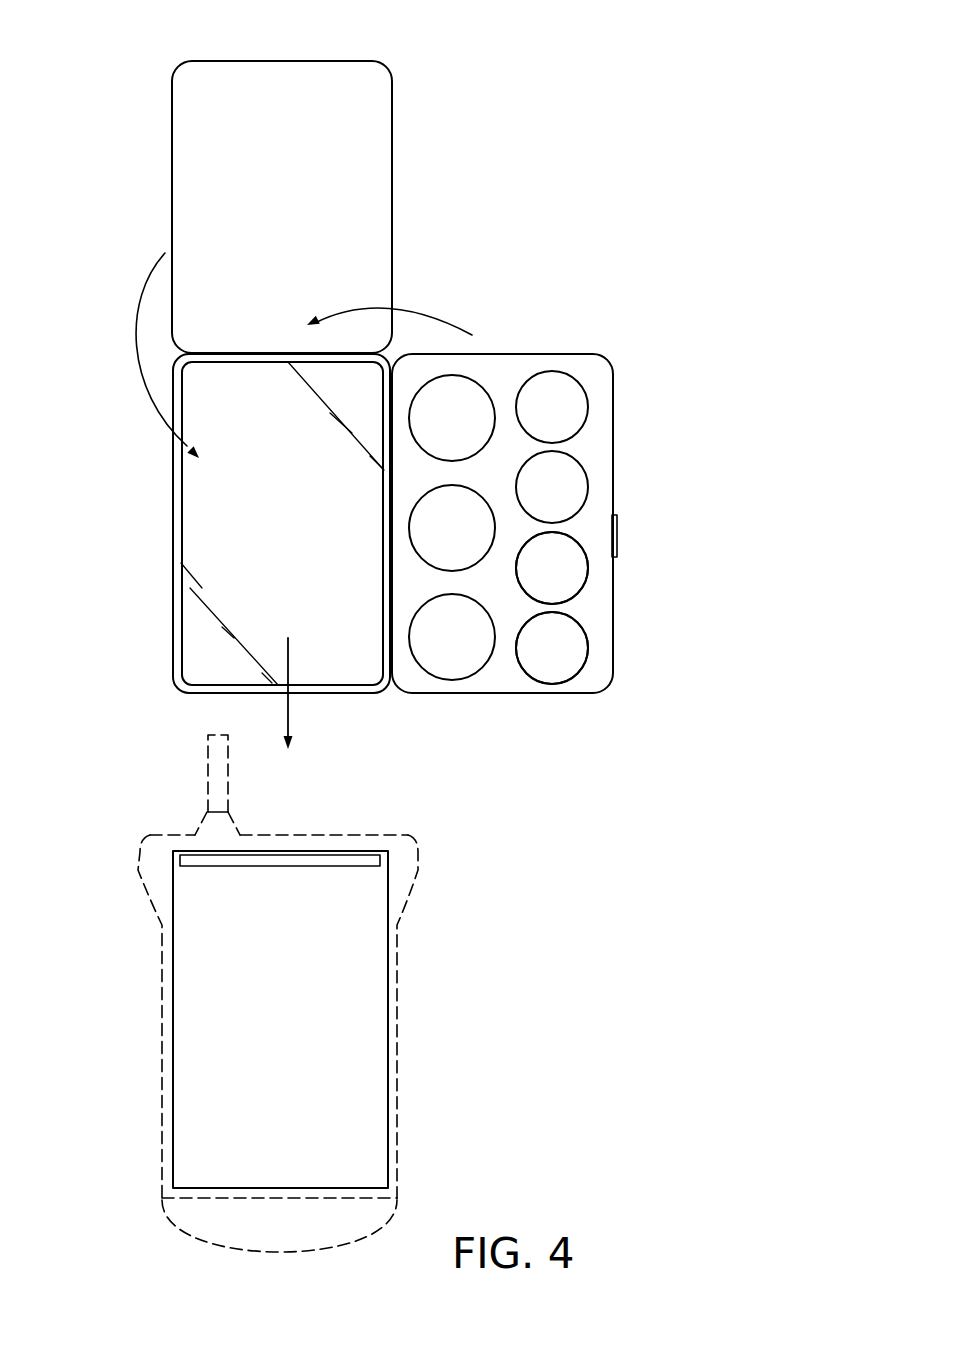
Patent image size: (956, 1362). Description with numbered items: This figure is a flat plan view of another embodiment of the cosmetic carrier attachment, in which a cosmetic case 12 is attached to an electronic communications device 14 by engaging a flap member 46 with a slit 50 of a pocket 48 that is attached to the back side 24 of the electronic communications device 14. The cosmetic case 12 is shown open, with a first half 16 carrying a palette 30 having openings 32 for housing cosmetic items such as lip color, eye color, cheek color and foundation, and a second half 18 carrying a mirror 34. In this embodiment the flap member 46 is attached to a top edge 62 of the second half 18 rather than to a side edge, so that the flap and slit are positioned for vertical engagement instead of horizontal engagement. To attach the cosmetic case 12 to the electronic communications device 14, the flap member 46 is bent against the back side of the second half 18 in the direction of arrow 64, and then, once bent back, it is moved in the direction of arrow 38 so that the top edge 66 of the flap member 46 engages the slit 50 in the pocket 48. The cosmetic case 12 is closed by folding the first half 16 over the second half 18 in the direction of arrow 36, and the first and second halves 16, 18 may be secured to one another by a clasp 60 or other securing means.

The cosmetic case 12 is at (515, 344).
The electronic communications device 14 is at (418, 853).
The first half 16 is at (597, 438).
The second half 18 is at (180, 512).
The back side 24 is at (316, 1245).
The palette 30 is at (504, 482).
The openings 32 is at (558, 573).
The mirror 34 is at (300, 509).
The arrow 36 is at (418, 308).
The arrow 38 is at (288, 718).
The flap member 46 is at (287, 97).
The pocket 48 is at (353, 1035).
The slit 50 is at (322, 865).
The clasp 60 is at (617, 538).
The top edge 62 is at (238, 345).
The arrow 64 is at (137, 337).
The top edge 66 is at (221, 60).